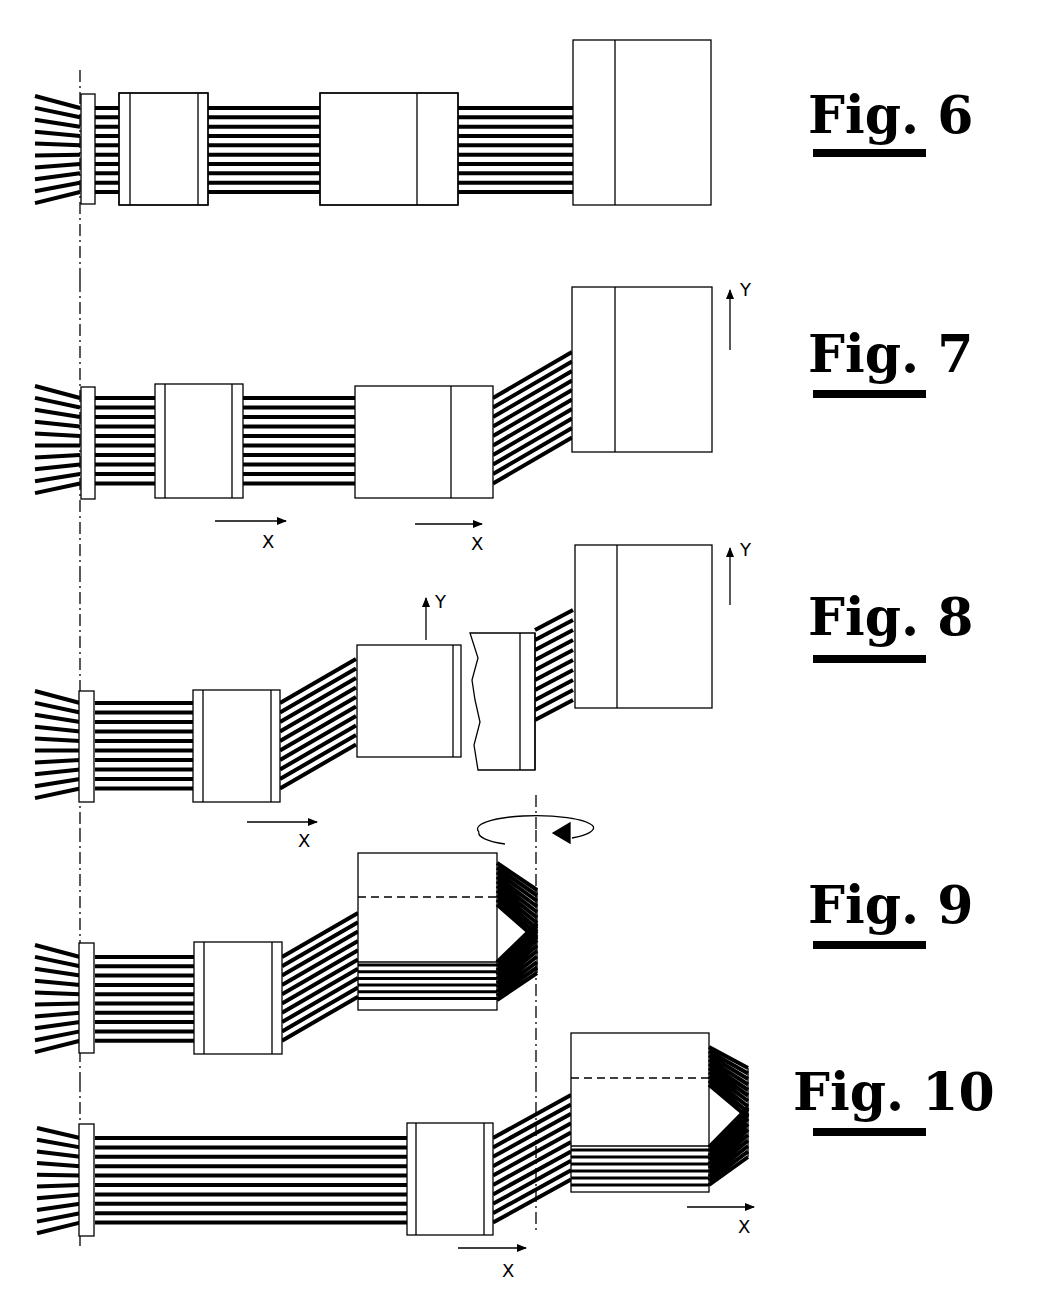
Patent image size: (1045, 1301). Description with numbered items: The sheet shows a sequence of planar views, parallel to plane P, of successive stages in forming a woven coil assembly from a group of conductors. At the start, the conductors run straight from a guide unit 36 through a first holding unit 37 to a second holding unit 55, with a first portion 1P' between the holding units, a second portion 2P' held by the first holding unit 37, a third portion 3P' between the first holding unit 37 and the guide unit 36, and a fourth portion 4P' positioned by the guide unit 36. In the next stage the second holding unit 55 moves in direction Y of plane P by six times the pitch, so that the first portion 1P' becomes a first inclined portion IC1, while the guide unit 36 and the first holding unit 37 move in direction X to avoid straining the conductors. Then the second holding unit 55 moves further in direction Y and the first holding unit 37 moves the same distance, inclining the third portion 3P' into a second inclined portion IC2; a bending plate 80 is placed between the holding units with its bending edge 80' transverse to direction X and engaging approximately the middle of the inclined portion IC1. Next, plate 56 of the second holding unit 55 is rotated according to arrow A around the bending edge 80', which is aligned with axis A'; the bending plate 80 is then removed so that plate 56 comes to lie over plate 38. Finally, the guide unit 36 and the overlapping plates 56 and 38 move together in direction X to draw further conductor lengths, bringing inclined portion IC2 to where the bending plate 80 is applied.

In FIG. 6, the guide unit 36 is at (158, 214).
In FIG. 7, the guide unit 36 is at (185, 508).
In FIG. 8, the guide unit 36 is at (218, 806).
In FIG. 10, the guide unit 36 is at (429, 1244).
In FIG. 6, the first holding unit 37 is at (375, 214).
In FIG. 7, the first holding unit 37 is at (392, 508).
In FIG. 8, the first holding unit 37 is at (414, 760).
In FIG. 9, the plate 38 is at (410, 1004).
In FIG. 10, the plate 38 is at (647, 1184).
In FIG. 6, the second holding unit 55 is at (608, 214).
In FIG. 7, the second holding unit 55 is at (647, 458).
In FIG. 8, the second holding unit 55 is at (682, 712).
In FIG. 9, the plate 56 is at (372, 886).
In FIG. 10, the plate 56 is at (637, 1050).
In FIG. 8, the bending plate 80 is at (502, 680).
In FIG. 8, the bending edge 80' is at (576, 701).
In FIG. 6, the first portion of conductors 1P' is at (515, 106).
In FIG. 6, the second portion of conductors 2P' is at (374, 119).
In FIG. 6, the third portion of conductors 3P' is at (264, 186).
In FIG. 6, the fourth portion of conductors 4P' is at (189, 117).
In FIG. 7, the plane P is at (407, 401).
In FIG. 7, the first inclined portion IC1 is at (549, 468).
In FIG. 8, the second inclined portion IC2 is at (303, 676).
In FIG. 10, the second inclined portion IC2 is at (521, 1110).
In FIG. 8, the arrow of rotation A is at (543, 843).
In FIG. 9, the axis A' is at (566, 917).